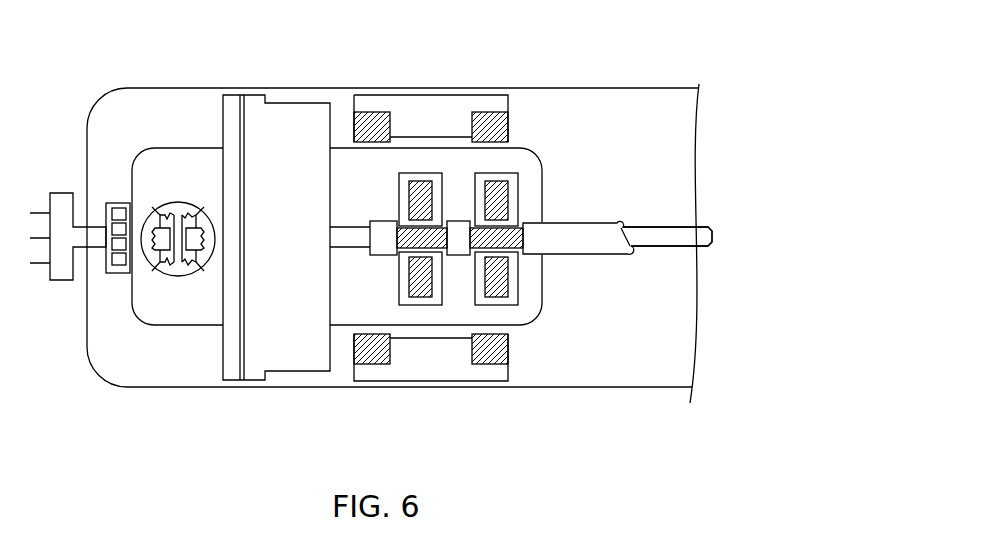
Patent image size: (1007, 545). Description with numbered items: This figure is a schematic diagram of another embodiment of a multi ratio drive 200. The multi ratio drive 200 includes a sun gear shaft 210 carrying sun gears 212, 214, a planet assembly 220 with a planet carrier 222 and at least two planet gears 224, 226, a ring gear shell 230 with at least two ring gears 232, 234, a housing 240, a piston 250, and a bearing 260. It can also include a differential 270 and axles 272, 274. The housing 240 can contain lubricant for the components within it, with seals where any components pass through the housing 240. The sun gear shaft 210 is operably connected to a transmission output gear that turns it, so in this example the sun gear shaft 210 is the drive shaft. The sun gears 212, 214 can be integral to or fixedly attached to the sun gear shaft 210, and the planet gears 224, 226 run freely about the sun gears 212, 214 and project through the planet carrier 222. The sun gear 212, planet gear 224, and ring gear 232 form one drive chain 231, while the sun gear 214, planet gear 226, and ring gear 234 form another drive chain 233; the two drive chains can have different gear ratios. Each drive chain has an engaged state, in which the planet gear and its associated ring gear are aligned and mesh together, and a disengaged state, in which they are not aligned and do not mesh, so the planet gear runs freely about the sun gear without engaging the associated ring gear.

The multi ratio drive 200 is at (118, 56).
The sun gear shaft 210 is at (605, 227).
The sun gear 212 is at (396, 236).
The sun gear 214 is at (512, 238).
The planet assembly 220 is at (467, 258).
The planet carrier 222 is at (518, 148).
The planet gear 224 is at (413, 192).
The planet gear 226 is at (507, 187).
The ring gear shell 230 is at (428, 97).
The drive chain 231 is at (373, 398).
The ring gear 232 is at (370, 118).
The drive chain 233 is at (488, 398).
The ring gear 234 is at (485, 118).
The housing 240 is at (595, 88).
The piston 250 is at (298, 115).
The bearing 260 is at (106, 207).
The differential 270 is at (178, 207).
The axle 272 is at (98, 241).
The axle 274 is at (648, 238).